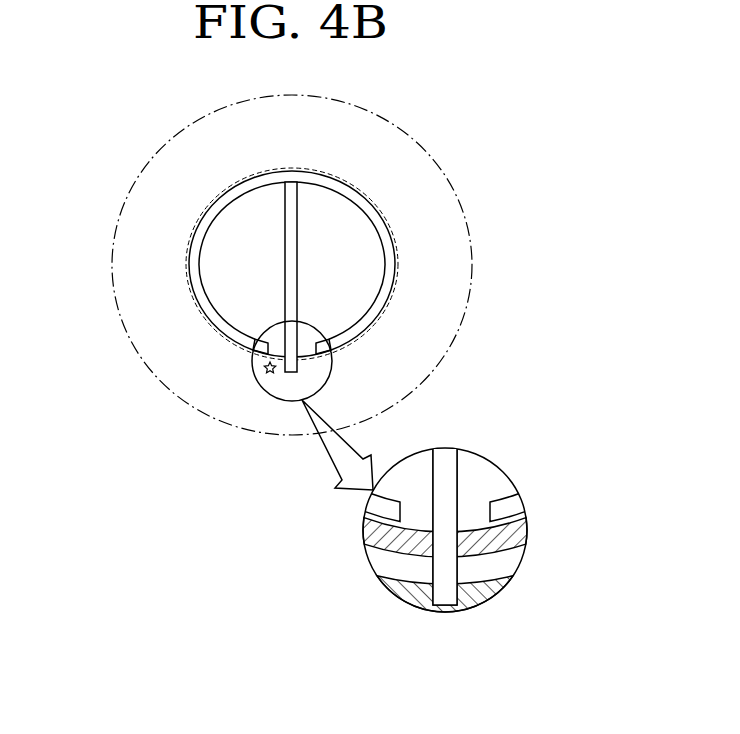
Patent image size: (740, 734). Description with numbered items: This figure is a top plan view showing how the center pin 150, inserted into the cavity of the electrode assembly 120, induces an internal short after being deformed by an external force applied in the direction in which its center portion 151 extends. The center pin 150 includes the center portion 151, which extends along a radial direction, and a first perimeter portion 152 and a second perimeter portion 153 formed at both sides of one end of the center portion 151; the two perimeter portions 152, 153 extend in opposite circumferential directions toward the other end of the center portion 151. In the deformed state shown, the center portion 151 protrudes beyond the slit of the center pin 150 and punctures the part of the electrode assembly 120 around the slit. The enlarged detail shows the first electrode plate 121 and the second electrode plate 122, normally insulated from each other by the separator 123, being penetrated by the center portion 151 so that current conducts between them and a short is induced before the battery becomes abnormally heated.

The electrode assembly 120 is at (387, 153).
The first electrode plate 121 is at (517, 532).
The second electrode plate 122 is at (490, 593).
The separator 123 is at (508, 563).
The center pin 150 is at (378, 204).
The center portion 151 is at (292, 230).
The first perimeter portion 152 is at (200, 266).
The second perimeter portion 153 is at (385, 263).